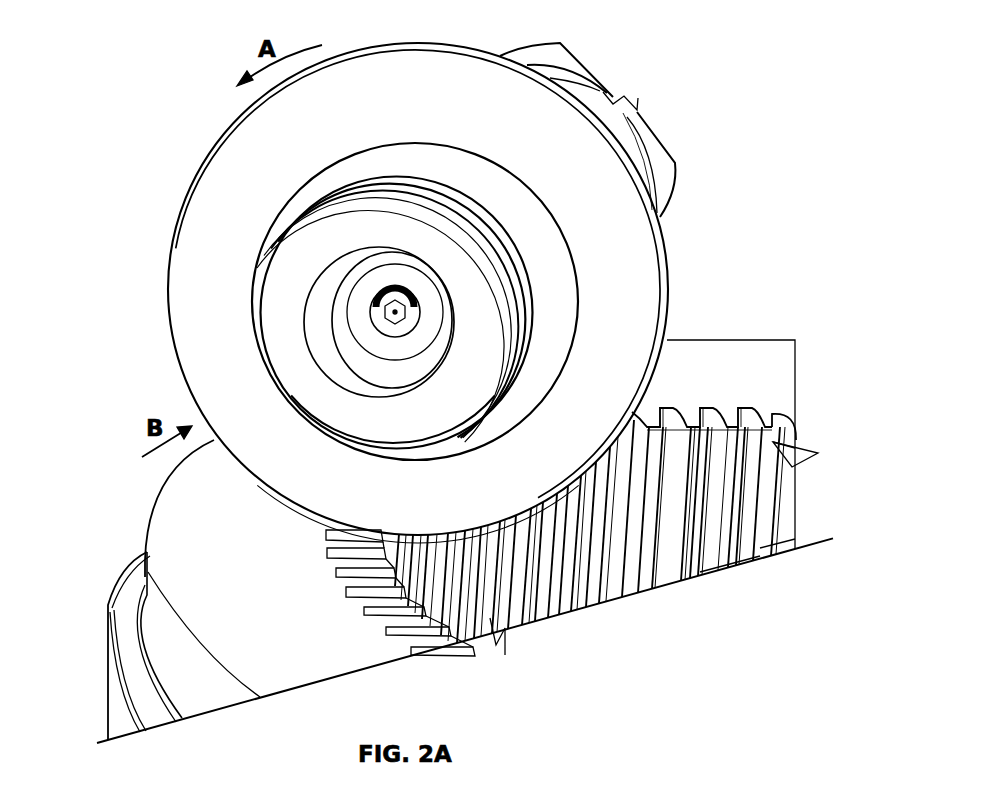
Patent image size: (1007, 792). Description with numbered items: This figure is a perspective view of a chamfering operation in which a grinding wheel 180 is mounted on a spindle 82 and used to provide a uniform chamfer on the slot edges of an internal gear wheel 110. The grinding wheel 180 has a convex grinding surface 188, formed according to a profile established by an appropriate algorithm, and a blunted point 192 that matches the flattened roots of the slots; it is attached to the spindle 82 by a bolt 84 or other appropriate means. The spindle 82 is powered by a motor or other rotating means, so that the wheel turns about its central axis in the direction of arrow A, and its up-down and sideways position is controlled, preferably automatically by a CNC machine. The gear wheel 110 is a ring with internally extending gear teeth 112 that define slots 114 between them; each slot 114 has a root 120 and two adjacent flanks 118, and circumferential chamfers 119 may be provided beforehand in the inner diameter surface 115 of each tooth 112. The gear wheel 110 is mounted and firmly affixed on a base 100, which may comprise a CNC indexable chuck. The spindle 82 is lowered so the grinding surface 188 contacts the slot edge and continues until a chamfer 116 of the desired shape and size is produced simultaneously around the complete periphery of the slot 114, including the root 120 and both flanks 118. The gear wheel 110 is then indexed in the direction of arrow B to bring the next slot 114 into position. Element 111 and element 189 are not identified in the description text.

The spindle 82 is at (613, 130).
The bolt 84 is at (383, 318).
The base 100 is at (115, 705).
The internal gear wheel 110 is at (108, 538).
The housing edge 111 is at (178, 511).
The gear teeth 112 is at (772, 417).
The slots 114 is at (755, 484).
The inner diameter surface 115 is at (765, 543).
The chamfer 116 is at (753, 413).
The flanks 118 is at (742, 558).
The circumferential chamfers 119 is at (793, 462).
The root 120 is at (705, 417).
The grinding wheel 180 is at (130, 238).
The convex grinding surface 188 is at (247, 284).
The raised platform 189 is at (285, 218).
The blunted point 192 is at (225, 130).